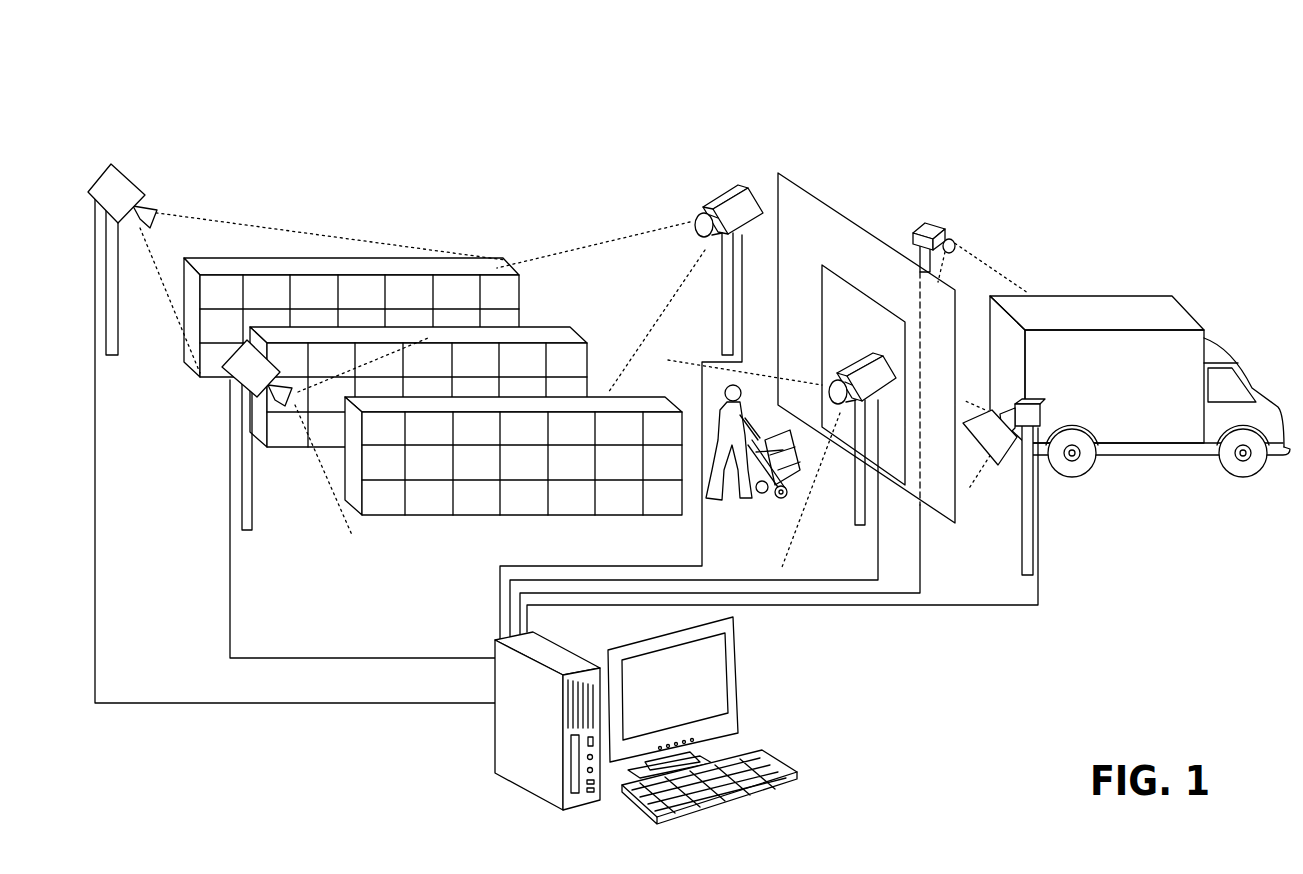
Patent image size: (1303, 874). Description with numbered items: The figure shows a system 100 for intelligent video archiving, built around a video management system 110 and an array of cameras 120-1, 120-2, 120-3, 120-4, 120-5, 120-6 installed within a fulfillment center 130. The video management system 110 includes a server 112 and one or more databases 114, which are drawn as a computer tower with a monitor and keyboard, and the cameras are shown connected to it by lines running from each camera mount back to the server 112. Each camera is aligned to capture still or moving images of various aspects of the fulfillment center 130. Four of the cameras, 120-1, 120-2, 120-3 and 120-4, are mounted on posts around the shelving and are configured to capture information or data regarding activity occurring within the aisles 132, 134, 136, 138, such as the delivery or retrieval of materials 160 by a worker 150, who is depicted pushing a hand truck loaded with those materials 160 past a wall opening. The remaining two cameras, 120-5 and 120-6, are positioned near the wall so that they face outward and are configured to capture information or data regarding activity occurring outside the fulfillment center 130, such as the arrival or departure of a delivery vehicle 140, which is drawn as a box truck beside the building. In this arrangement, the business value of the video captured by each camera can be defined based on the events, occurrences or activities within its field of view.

The system 100 is at (435, 58).
The video management system 110 is at (622, 721).
The server 112 is at (658, 721).
The databases 114 is at (565, 755).
The camera 120-1 is at (130, 178).
The camera 120-2 is at (245, 368).
The camera 120-3 is at (735, 205).
The camera 120-4 is at (872, 370).
The camera 120-5 is at (930, 228).
The camera 120-6 is at (1035, 418).
The fulfillment center 130 is at (594, 102).
The aisle 132 is at (339, 214).
The aisle 134 is at (457, 304).
The aisle 136 is at (578, 385).
The aisle 138 is at (463, 543).
The delivery vehicle 140 is at (1134, 284).
The worker 150 is at (740, 377).
The materials 160 is at (775, 495).